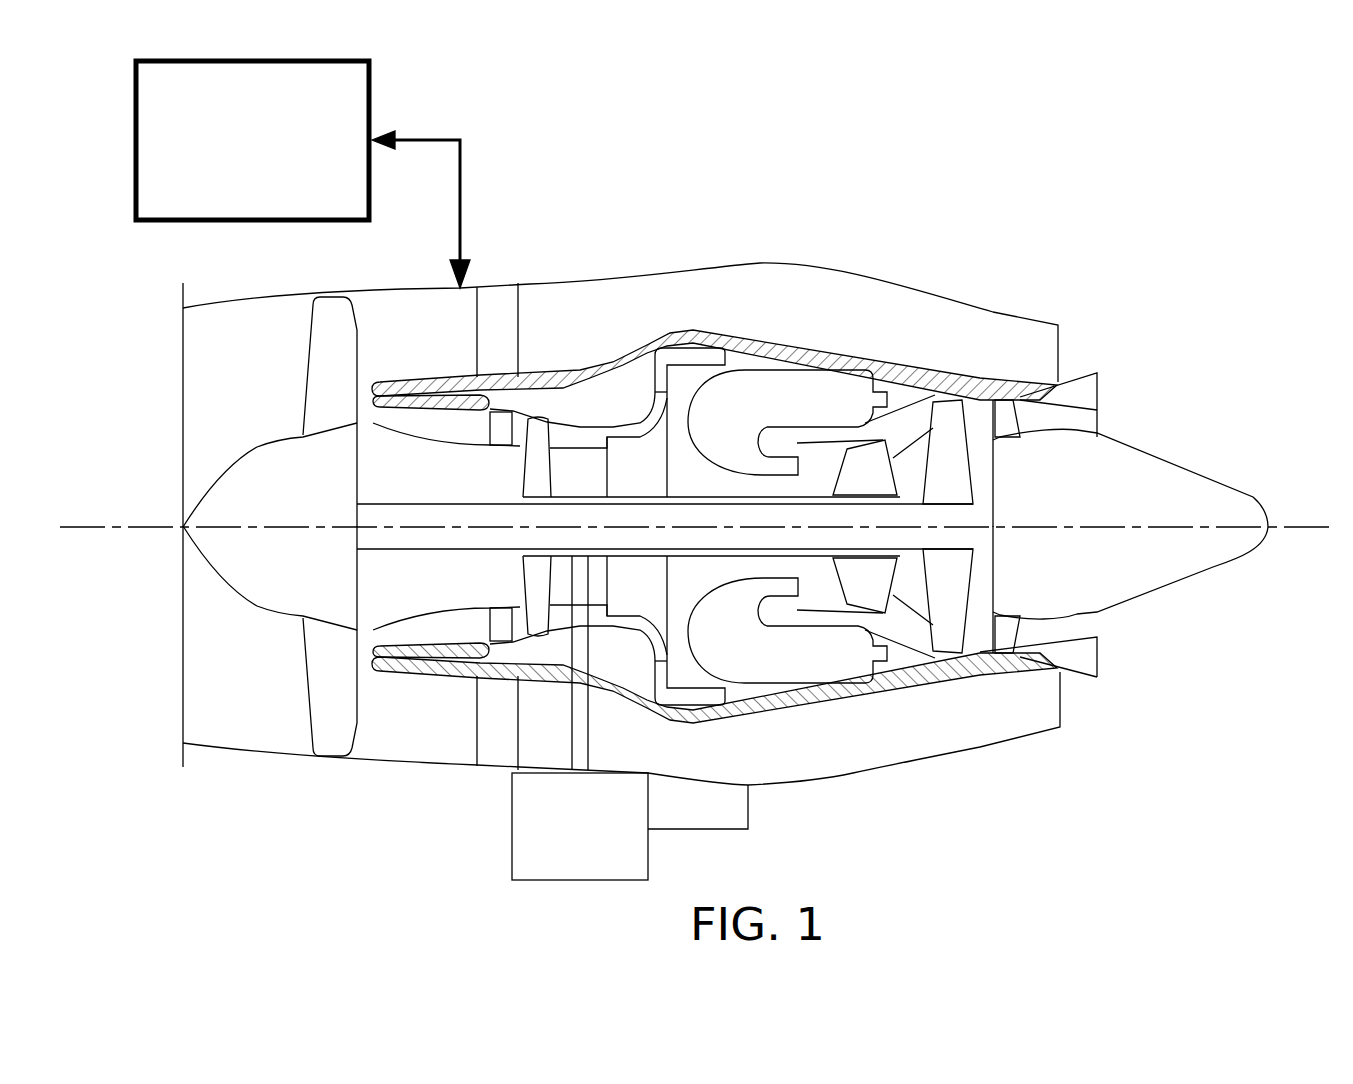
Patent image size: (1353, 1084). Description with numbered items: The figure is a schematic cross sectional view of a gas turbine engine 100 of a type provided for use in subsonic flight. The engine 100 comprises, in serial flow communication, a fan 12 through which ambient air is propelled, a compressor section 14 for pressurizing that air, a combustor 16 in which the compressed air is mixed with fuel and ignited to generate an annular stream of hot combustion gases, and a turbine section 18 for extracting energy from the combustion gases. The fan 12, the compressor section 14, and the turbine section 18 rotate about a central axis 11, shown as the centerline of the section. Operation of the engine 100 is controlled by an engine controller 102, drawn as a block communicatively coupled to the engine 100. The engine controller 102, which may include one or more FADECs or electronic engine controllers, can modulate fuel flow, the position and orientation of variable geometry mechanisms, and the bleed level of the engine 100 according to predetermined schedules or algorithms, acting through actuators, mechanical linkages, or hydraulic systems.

The gas turbine engine 100 is at (935, 208).
The engine controller 102 is at (276, 190).
The central axis 11 is at (1303, 527).
The fan 12 is at (325, 673).
The compressor section 14 is at (571, 428).
The combustor 16 is at (781, 390).
The turbine section 18 is at (908, 590).